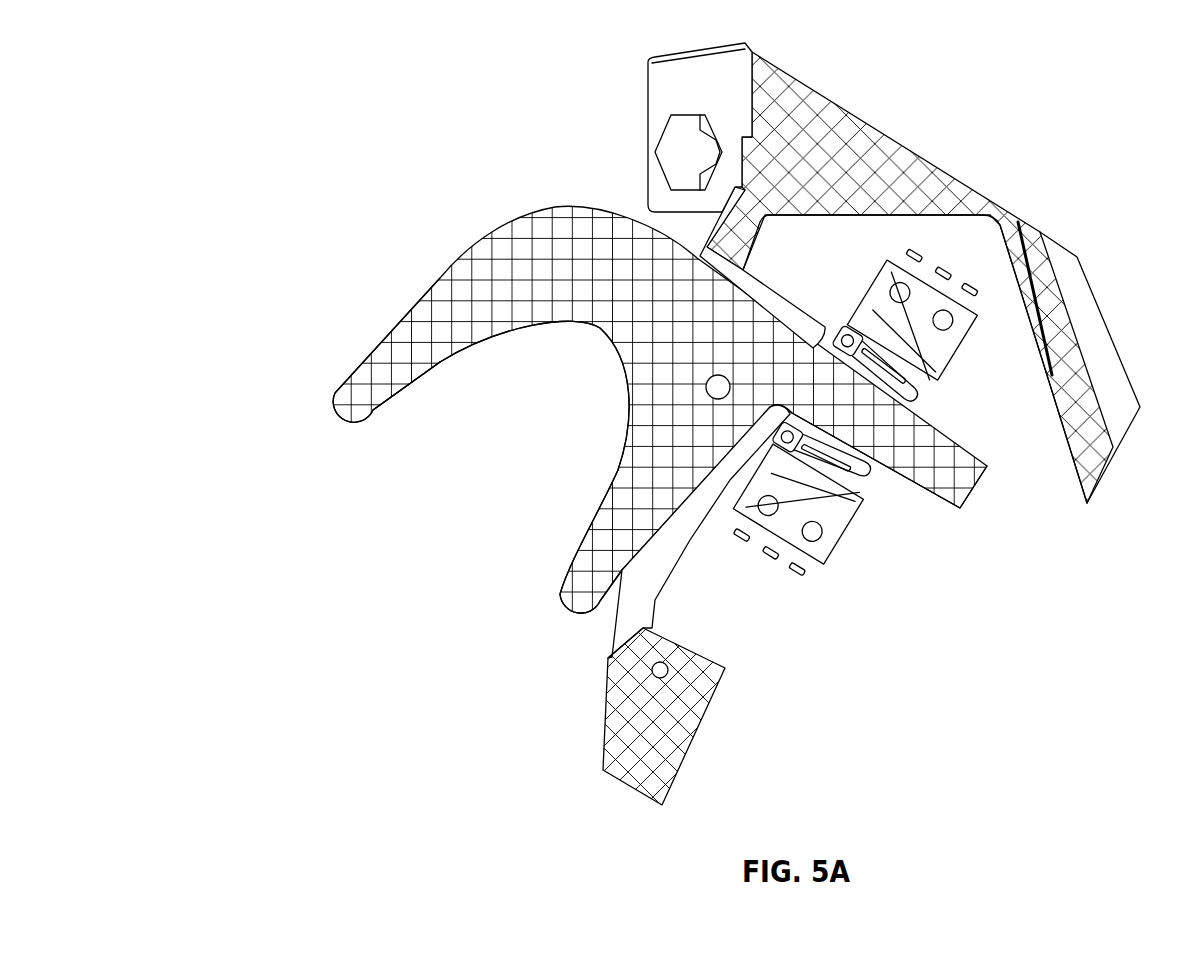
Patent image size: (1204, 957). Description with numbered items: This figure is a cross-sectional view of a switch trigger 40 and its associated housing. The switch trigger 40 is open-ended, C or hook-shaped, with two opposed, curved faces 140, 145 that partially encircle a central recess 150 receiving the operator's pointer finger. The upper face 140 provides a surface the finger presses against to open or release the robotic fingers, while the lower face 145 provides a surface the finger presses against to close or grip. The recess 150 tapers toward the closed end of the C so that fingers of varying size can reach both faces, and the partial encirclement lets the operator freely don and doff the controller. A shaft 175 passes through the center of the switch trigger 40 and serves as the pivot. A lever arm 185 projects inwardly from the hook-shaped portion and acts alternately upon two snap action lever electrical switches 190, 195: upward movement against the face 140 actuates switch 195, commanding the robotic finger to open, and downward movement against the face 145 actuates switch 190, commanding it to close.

The switch trigger 40 is at (643, 272).
The upper face 140 is at (373, 402).
The lower face 145 is at (593, 582).
The central recess 150 is at (501, 397).
The shaft 175 is at (724, 392).
The lever arm 185 is at (945, 462).
The snap action lever electrical switch 190 is at (913, 328).
The snap action lever electrical switch 195 is at (832, 507).